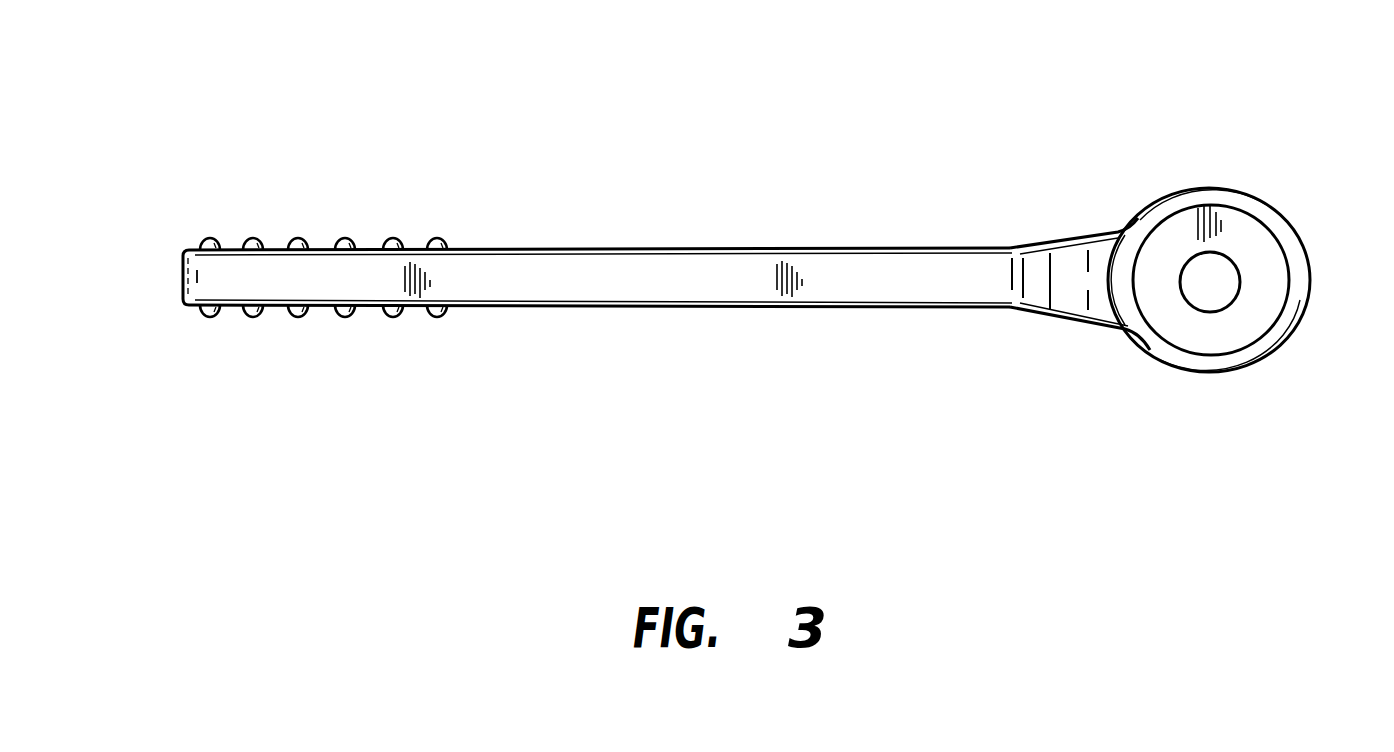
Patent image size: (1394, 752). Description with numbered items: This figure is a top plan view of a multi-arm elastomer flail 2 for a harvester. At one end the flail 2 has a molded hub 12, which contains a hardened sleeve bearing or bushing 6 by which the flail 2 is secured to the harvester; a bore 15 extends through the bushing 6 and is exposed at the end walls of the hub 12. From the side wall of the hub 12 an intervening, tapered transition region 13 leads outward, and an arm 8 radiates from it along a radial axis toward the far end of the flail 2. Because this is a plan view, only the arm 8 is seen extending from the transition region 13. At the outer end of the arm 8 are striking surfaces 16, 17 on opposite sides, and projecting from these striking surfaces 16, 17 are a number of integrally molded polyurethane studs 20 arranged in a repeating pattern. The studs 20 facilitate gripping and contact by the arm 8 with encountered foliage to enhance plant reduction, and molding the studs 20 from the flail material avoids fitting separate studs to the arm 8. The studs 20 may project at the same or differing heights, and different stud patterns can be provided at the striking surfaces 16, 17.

The multi-arm elastomer flail 2 is at (812, 133).
The hardened sleeve bearing or bushing 6 is at (1262, 263).
The arm 8 is at (627, 264).
The molded hub 12 is at (1257, 200).
The tapered transition region 13 is at (1080, 322).
The bore 15 is at (1205, 258).
The striking surface 16 is at (193, 306).
The striking surface 17 is at (193, 252).
The integrally molded polyurethane studs 20 is at (345, 240).